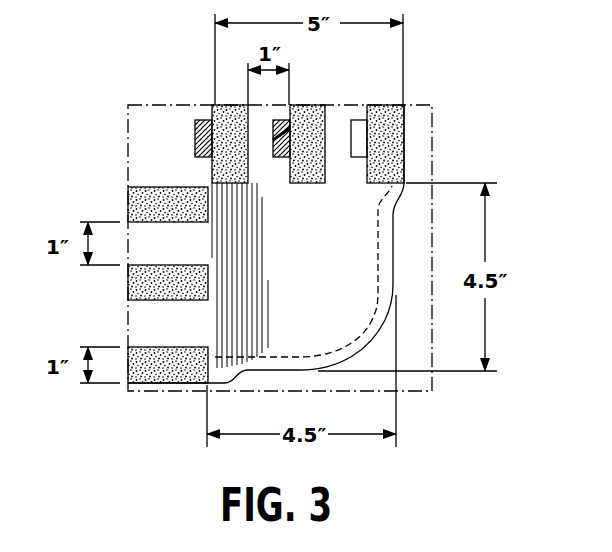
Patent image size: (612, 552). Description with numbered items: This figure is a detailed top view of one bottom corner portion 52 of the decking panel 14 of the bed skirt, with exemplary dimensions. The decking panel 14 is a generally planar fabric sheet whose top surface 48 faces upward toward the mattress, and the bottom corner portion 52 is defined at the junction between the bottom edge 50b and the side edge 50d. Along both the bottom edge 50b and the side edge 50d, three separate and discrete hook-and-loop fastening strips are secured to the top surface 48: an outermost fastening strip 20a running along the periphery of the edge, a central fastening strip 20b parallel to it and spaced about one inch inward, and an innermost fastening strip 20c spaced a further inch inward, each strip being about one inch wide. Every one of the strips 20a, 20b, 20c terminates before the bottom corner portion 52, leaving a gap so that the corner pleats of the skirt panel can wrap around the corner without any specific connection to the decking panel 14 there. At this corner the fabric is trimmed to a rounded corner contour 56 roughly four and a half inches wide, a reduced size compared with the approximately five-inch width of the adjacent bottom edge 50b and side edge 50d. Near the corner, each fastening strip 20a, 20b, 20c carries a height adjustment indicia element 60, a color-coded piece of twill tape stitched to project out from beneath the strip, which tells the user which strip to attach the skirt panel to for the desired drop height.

The decking panel 14 is at (452, 80).
The outermost fastening strip 20a is at (388, 118).
The central fastening strip 20b is at (315, 118).
The innermost fastening strip 20c is at (228, 110).
The top surface 48 is at (178, 155).
The bottom edge 50b is at (175, 390).
The side edge 50d is at (404, 165).
The bottom corner portion 52 is at (352, 262).
The rounded corner contour 56 is at (372, 343).
The height adjustment indicia element 60 is at (202, 122).